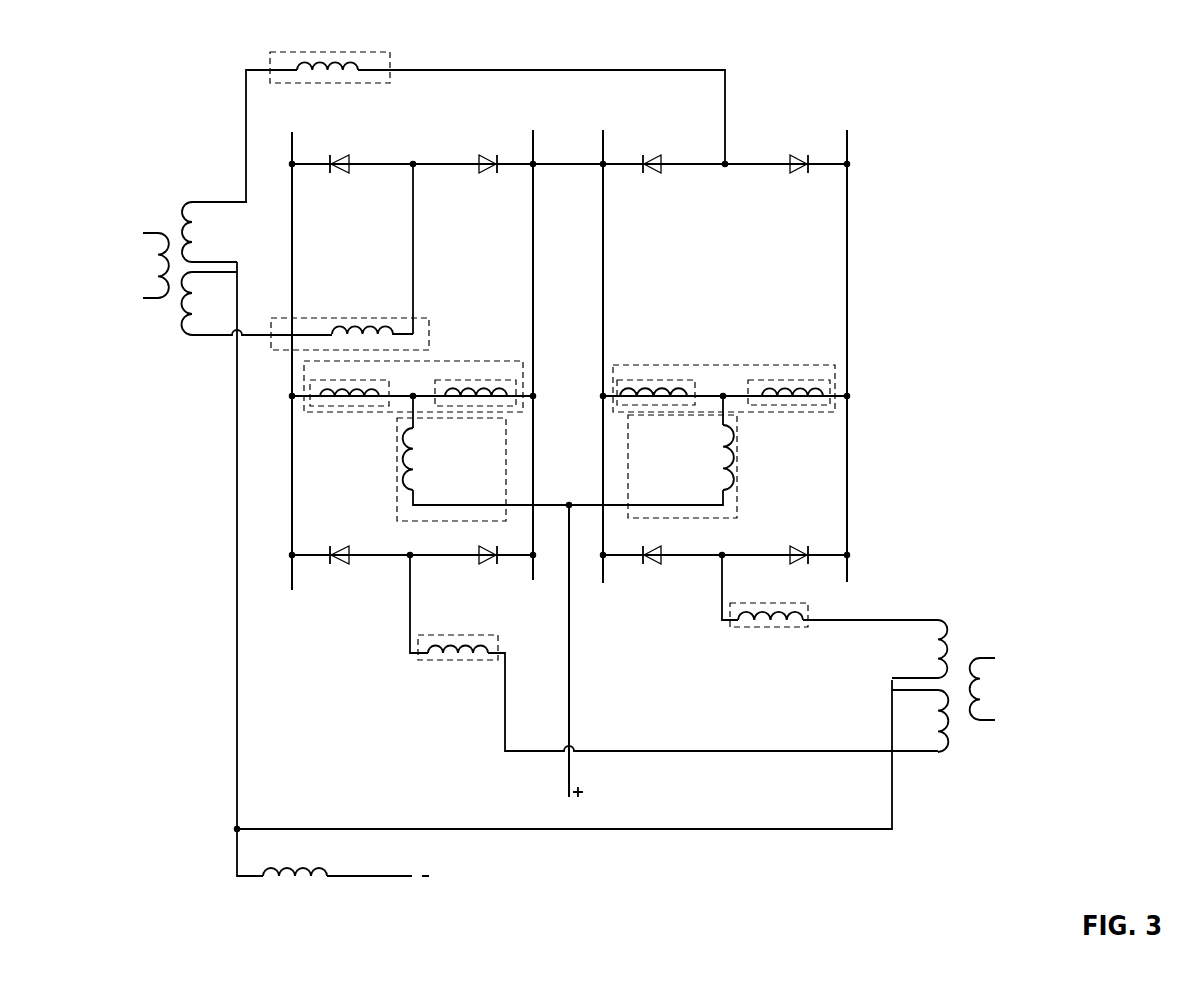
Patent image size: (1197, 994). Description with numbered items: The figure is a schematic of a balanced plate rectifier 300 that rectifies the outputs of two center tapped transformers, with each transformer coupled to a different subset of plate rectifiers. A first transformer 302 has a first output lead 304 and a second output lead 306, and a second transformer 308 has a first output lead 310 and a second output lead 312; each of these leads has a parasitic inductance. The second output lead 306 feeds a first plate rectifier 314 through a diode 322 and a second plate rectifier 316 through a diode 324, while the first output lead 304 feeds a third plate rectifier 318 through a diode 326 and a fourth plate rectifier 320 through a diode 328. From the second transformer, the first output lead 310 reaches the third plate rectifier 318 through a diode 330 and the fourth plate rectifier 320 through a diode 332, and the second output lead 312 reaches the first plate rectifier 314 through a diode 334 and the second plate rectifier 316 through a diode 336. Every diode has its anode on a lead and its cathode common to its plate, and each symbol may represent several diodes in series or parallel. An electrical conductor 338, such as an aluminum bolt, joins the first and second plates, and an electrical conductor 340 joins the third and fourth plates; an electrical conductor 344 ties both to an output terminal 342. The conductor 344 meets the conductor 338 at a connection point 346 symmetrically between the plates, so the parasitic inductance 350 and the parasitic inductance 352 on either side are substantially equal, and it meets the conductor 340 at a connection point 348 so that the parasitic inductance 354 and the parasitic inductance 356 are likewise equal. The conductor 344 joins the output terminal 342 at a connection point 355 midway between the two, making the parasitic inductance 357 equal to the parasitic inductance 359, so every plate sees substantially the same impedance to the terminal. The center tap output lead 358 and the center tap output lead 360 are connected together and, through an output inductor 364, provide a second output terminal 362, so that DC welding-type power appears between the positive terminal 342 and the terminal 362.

The balanced plate rectifier 300 is at (168, 56).
The first transformer 302 is at (172, 208).
The first output lead 304 is at (325, 85).
The second output lead 306 is at (370, 316).
The second transformer 308 is at (970, 618).
The first output lead 310 is at (772, 630).
The second output lead 312 is at (460, 662).
The first plate rectifier 314 is at (292, 582).
The second plate rectifier 316 is at (530, 140).
The third plate rectifier 318 is at (604, 140).
The fourth plate rectifier 320 is at (849, 140).
The diode 322 is at (347, 156).
The diode 324 is at (486, 157).
The diode 326 is at (656, 159).
The diode 328 is at (800, 159).
The diode 330 is at (650, 567).
The diode 332 is at (798, 551).
The diode 334 is at (338, 567).
The diode 336 is at (488, 567).
The electrical conductor 338 is at (493, 362).
The electrical conductor 340 is at (642, 364).
The output terminal 342 is at (572, 770).
The electrical conductor 344 is at (397, 503).
The connection point 346 is at (415, 400).
The connection point 348 is at (723, 394).
The parasitic inductance 350 is at (376, 391).
The parasitic inductance 352 is at (453, 388).
The parasitic inductance 354 is at (633, 394).
The connection point 355 is at (569, 505).
The parasitic inductance 356 is at (800, 385).
The parasitic inductance 357 is at (420, 461).
The center tap output lead 358 is at (217, 262).
The parasitic inductance 359 is at (730, 474).
The center tap output lead 360 is at (916, 679).
The second output terminal 362 is at (372, 872).
The output inductor 364 is at (317, 866).